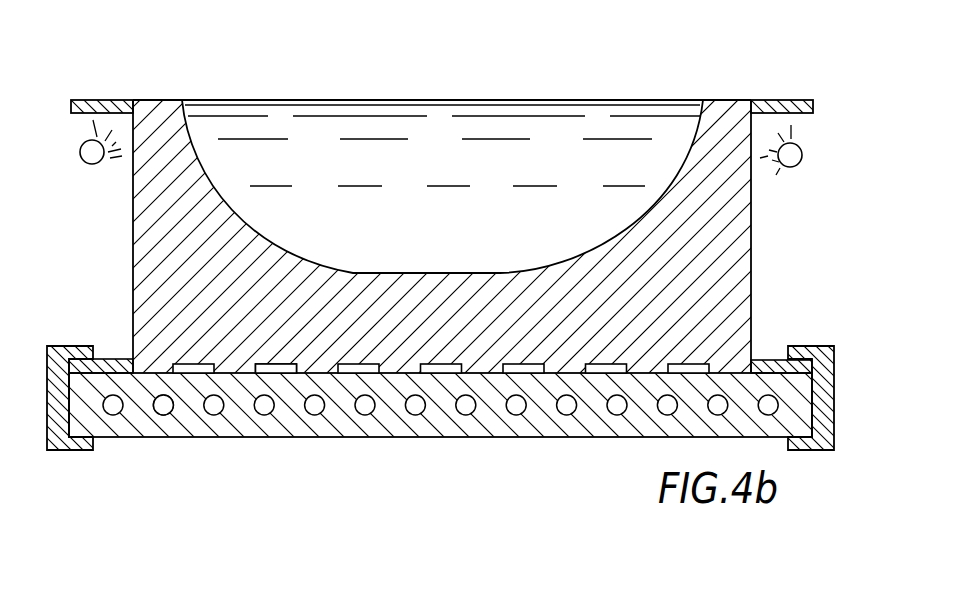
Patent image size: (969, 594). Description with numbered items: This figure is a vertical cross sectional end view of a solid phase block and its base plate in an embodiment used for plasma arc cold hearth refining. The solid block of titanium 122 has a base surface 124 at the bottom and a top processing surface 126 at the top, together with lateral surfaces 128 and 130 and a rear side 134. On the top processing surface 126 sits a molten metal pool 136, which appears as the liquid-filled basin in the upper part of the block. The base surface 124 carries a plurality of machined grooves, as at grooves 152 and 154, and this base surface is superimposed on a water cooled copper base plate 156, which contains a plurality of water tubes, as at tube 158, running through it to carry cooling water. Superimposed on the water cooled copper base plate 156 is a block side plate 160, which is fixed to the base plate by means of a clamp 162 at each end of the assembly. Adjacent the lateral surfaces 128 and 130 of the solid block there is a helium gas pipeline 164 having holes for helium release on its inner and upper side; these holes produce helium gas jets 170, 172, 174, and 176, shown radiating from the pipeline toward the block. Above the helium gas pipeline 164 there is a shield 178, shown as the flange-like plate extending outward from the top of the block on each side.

The solid block of titanium 122 is at (164, 93).
The base surface 124 is at (578, 375).
The top processing surface 126 is at (730, 99).
The lateral surface 128 is at (751, 291).
The lateral surface 130 is at (133, 254).
The rear side 134 is at (150, 287).
The molten metal pool 136 is at (636, 100).
The machined groove 152 is at (275, 367).
The machined groove 154 is at (443, 371).
The water cooled copper base plate 156 is at (158, 414).
The water tube 158 is at (514, 414).
The block side plate 160 is at (762, 361).
The clamp 162 is at (834, 403).
The helium gas pipeline 164 is at (803, 157).
The helium gas jet 170 is at (108, 164).
The helium gas jet 172 is at (94, 126).
The helium gas jet 174 is at (767, 163).
The helium gas jet 176 is at (792, 128).
The shield 178 is at (72, 99).